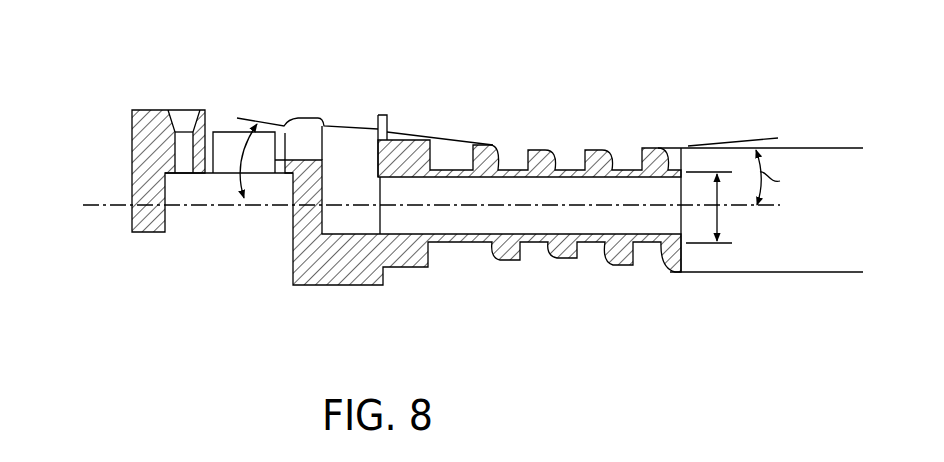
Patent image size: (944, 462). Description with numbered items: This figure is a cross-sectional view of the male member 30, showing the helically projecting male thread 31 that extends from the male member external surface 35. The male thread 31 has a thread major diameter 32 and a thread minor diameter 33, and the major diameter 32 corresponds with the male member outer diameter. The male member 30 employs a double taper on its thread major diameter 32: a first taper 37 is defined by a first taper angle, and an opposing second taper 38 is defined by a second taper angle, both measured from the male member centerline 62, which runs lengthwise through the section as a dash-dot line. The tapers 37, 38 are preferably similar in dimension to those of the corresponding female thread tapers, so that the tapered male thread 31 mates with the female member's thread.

The male member 30 is at (205, 322).
The male thread 31 is at (589, 150).
The thread major diameter 32 is at (847, 222).
The thread minor diameter 33 is at (718, 214).
The male member external surface 35 is at (513, 167).
The first taper 37 is at (705, 147).
The second taper 38 is at (278, 121).
The male member centerline 62 is at (103, 203).